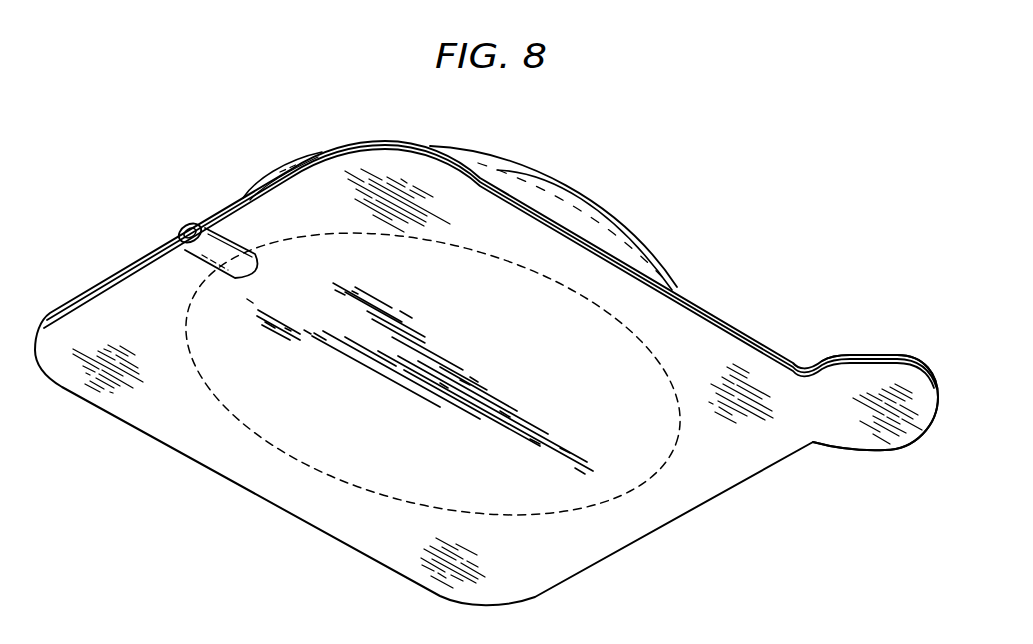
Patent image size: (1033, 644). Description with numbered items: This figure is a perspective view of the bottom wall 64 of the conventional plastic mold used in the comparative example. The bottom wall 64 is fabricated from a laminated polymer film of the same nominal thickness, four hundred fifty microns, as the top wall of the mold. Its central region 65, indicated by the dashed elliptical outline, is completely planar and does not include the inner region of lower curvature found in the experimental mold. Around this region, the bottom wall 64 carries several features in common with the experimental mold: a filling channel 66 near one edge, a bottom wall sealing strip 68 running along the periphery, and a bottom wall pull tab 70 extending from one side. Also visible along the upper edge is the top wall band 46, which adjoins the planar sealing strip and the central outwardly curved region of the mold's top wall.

The bottom wall 64 is at (242, 506).
The filling channel 66 is at (175, 224).
The top wall band 46 is at (572, 206).
The bottom wall sealing strip 68 is at (644, 334).
The central region 65 is at (464, 361).
The bottom wall pull tab 70 is at (830, 406).